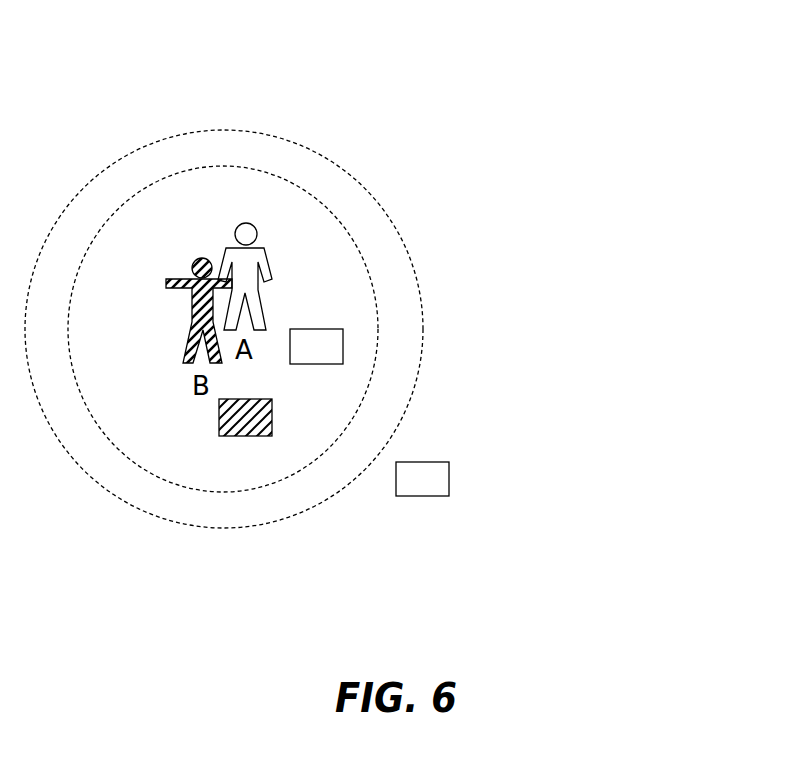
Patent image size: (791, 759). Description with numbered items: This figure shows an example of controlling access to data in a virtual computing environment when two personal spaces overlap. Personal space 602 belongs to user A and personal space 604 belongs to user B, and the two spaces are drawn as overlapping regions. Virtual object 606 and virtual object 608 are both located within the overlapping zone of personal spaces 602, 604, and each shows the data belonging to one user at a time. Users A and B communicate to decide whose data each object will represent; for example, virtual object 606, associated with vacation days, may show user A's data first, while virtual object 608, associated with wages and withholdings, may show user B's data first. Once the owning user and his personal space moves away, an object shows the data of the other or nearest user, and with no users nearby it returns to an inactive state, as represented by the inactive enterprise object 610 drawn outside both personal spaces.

The personal space 602 is at (244, 131).
The personal space 604 is at (279, 187).
The virtual object 606 is at (333, 329).
The virtual object 608 is at (272, 416).
The inactive enterprise object 610 is at (432, 462).